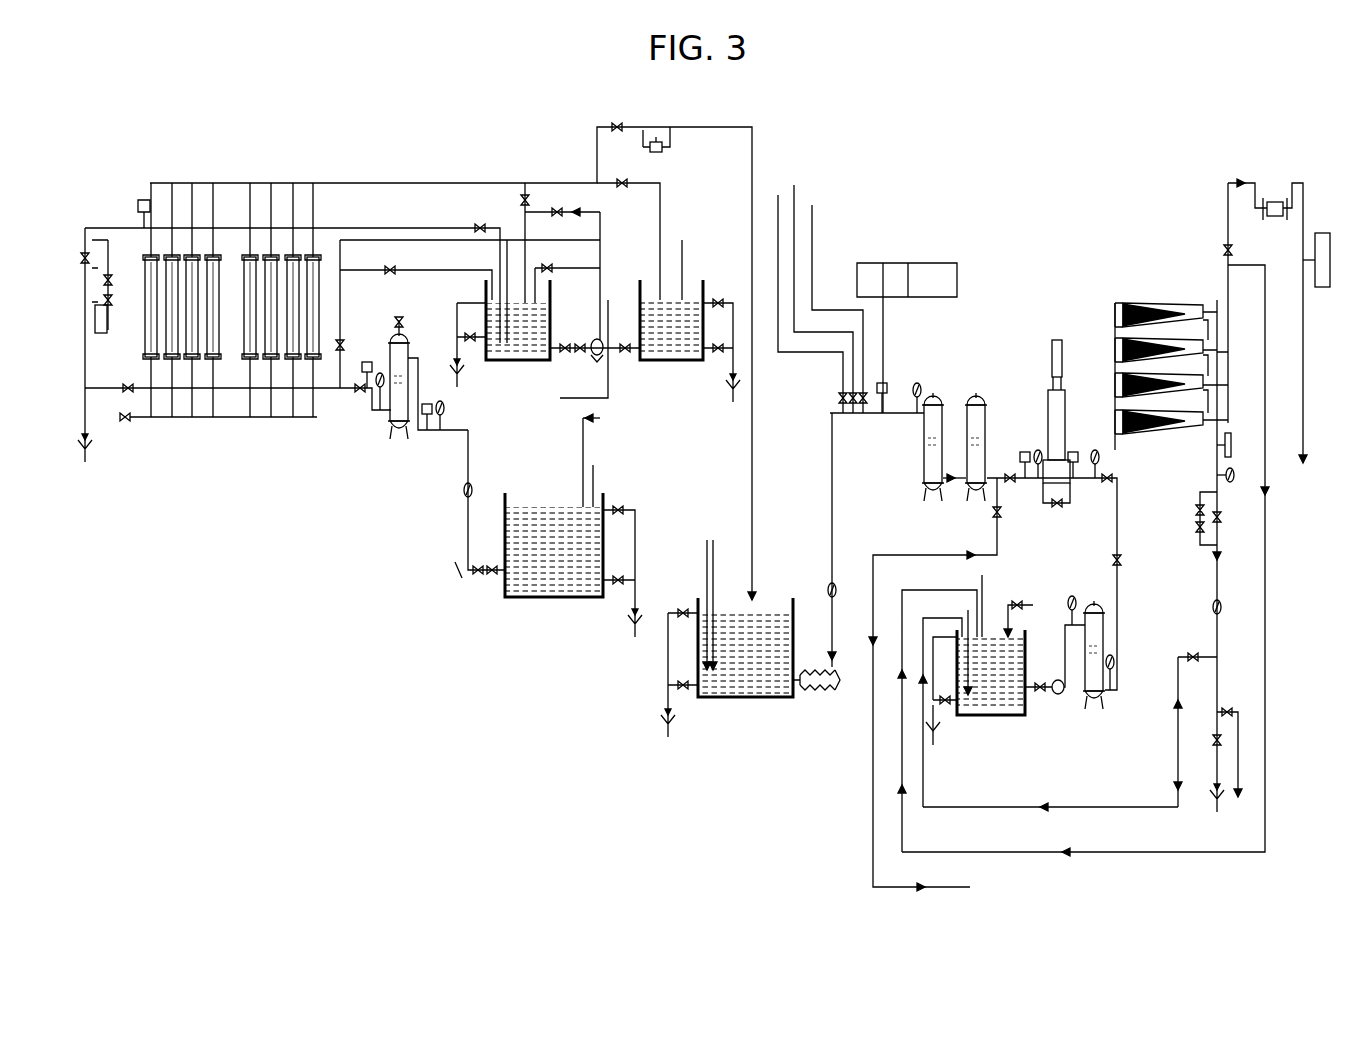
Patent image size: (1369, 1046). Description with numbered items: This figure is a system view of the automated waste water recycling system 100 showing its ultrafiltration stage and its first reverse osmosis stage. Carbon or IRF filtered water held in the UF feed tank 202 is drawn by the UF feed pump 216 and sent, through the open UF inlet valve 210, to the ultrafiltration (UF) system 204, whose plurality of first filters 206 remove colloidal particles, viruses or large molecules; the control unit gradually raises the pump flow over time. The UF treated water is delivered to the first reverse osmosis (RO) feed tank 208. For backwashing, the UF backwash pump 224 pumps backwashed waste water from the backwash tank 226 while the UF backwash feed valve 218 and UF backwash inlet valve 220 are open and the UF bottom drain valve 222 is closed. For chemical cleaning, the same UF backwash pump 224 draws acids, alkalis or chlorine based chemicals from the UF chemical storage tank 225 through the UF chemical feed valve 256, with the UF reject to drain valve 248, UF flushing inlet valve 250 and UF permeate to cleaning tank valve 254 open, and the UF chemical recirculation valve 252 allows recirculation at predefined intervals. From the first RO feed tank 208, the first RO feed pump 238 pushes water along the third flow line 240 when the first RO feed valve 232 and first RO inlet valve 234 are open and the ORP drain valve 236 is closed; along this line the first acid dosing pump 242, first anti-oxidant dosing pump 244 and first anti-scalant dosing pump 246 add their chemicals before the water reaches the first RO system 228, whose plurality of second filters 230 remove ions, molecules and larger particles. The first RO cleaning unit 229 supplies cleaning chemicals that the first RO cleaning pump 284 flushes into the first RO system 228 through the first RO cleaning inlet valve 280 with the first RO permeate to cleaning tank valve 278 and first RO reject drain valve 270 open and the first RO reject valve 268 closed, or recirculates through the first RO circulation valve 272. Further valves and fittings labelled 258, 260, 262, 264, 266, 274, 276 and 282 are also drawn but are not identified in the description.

The automated waste water recycling system 100 is at (110, 73).
The UF feed tank 202 is at (553, 599).
The ultrafiltration (UF) system 204 is at (320, 395).
The plurality of first filters 206 is at (148, 272).
The first reverse osmosis (RO) feed tank 208 is at (745, 699).
The UF inlet valve 210 is at (362, 391).
The UF feed pump 216 is at (473, 582).
The UF backwash feed valve 218 is at (599, 338).
The UF backwash inlet valve 220 is at (557, 210).
The UF bottom drain valve 222 is at (128, 386).
The UF backwash pump 224 is at (597, 362).
The UF chemical storage tank 225 is at (495, 363).
The backwash tank 226 is at (667, 363).
The first reverse osmosis (RO) system 228 is at (905, 415).
The first RO cleaning unit 229 is at (989, 717).
The plurality of second filters 230 is at (988, 420).
The first RO feed valve 232 is at (1000, 517).
The first RO inlet valve 234 is at (1106, 475).
The Oxidation Reduction potential (ORP) drain valve 236 is at (933, 501).
The first RO feed pump 238 is at (832, 694).
The third flow line 240 is at (831, 558).
The first acid dosing pump 242 is at (778, 280).
The first anti-oxidant dosing pump 244 is at (794, 280).
The first anti-scalant dosing pump 246 is at (812, 280).
The UF reject to drain valve 248 is at (86, 226).
The UF flushing inlet valve 250 is at (347, 340).
The UF chemical recirculation valve 252 is at (478, 226).
The UF permeate to cleaning tank (CT) valve 254 is at (523, 198).
The UF chemical feed valve 256 is at (566, 344).
The valve 258 is at (393, 271).
The valve 260 is at (549, 268).
The valve 262 is at (623, 183).
The valve 264 is at (617, 131).
The valve 266 is at (128, 421).
The first RO reject valve 268 is at (1218, 528).
The first RO reject drain valve 270 is at (1215, 742).
The first RO circulation valve 272 is at (1191, 656).
The valve 274 is at (1226, 710).
The valve 276 is at (1226, 250).
The first RO permeate to cleaning tank valve 278 is at (1265, 345).
The first RO cleaning inlet valve 280 is at (1119, 562).
The valve 282 is at (1021, 605).
The first RO cleaning pump 284 is at (1058, 697).